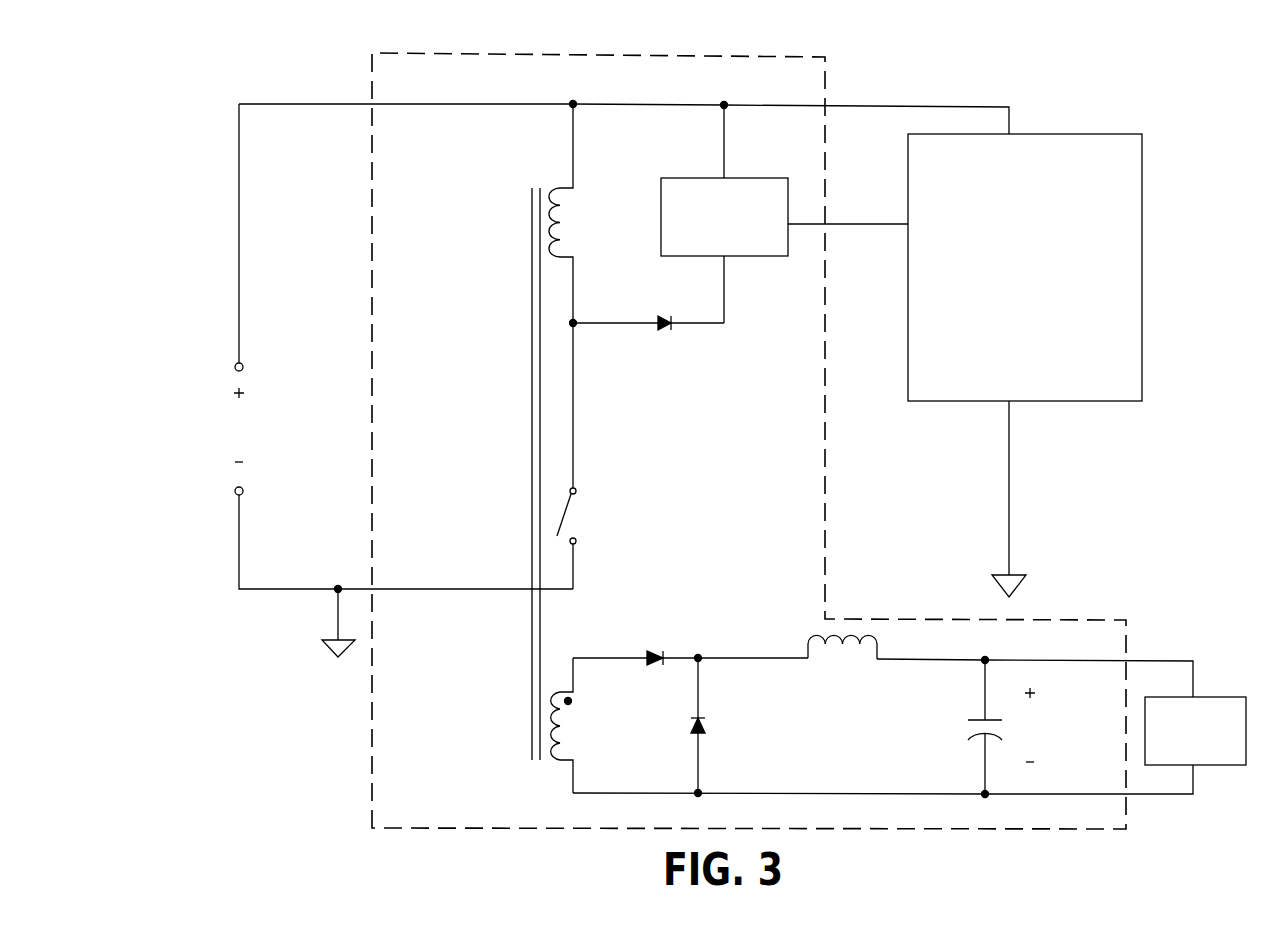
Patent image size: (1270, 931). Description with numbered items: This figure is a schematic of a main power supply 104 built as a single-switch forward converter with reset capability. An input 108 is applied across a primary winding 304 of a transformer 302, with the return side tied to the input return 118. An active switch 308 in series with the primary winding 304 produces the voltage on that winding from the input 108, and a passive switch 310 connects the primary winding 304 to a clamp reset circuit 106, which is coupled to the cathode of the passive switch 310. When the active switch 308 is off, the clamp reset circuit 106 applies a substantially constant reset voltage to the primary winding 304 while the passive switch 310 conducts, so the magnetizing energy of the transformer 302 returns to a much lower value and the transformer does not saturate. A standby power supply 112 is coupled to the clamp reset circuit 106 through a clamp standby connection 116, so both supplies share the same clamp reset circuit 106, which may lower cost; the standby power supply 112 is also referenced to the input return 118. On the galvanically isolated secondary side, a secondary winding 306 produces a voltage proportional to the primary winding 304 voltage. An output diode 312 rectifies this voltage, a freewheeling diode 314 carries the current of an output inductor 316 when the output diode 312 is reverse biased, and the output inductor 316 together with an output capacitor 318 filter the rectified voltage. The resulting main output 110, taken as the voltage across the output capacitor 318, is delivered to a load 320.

The main power supply 104 is at (443, 48).
The clamp reset circuit 106 is at (655, 180).
The input 108 is at (260, 418).
The main output 110 is at (1043, 712).
The standby power supply 112 is at (1078, 128).
The clamp standby connection 116 is at (840, 233).
The input return 118 is at (327, 623).
The transformer T2 302 is at (521, 320).
The primary winding 304 is at (586, 232).
The secondary winding 306 is at (583, 722).
The active switch S3 308 is at (618, 500).
The passive switch D5 310 is at (680, 360).
The output diode D6 312 is at (637, 637).
The freewheeling diode D7 314 is at (730, 745).
The output inductor L2 316 is at (840, 683).
The output capacitor C2 318 is at (972, 713).
The load 320 is at (1218, 692).